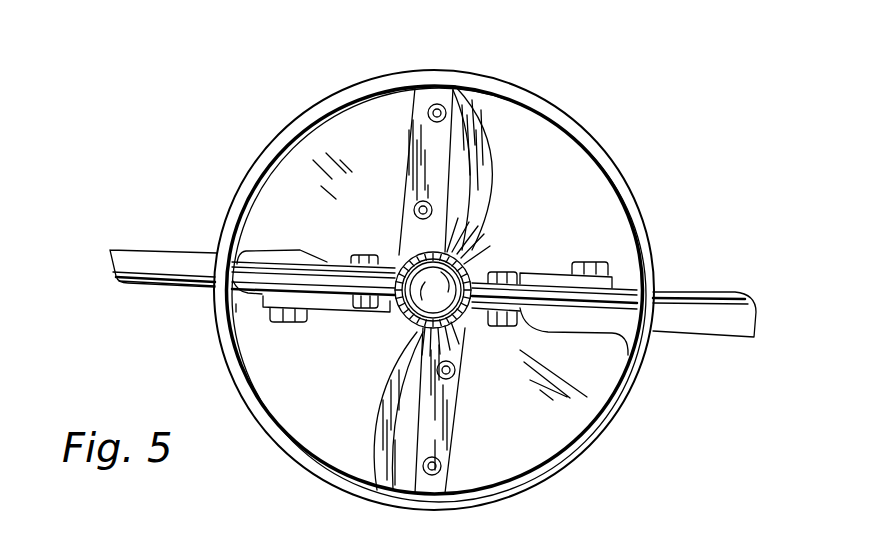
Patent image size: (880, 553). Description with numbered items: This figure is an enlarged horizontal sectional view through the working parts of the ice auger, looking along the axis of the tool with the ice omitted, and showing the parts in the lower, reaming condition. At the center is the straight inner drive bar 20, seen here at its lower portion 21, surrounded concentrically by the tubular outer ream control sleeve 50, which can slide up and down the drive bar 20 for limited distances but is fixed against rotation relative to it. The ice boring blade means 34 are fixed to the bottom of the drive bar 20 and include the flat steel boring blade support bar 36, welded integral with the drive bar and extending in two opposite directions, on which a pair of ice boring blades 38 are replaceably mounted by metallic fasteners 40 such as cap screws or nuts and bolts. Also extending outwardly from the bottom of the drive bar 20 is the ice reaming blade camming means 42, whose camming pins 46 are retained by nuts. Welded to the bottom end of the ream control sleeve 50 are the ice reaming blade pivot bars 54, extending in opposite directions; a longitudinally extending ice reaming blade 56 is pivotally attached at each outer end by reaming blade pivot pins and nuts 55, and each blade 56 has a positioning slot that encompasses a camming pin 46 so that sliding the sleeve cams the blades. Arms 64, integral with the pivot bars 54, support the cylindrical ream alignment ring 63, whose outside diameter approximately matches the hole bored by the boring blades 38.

The straight inner drive bar 20 is at (478, 268).
The lower portion of drive bar 21 is at (403, 309).
The ice boring blade means 34 is at (455, 424).
The boring blade support bar 36 is at (432, 137).
The ice boring blade 38 is at (277, 196).
The metallic fasteners 40 is at (430, 106).
The ice reaming blade camming means 42 is at (316, 315).
The ice reaming blade camming pin 46 is at (267, 312).
The tubular outer ream control sleeve 50 is at (452, 258).
The ice reaming blade pivot bar 54 is at (524, 308).
The reaming blade pivot pins and nuts 55 is at (366, 254).
The ice reaming blade 56 is at (130, 263).
The cylindrical ream alignment ring 63 is at (522, 99).
The arms 64 is at (243, 262).